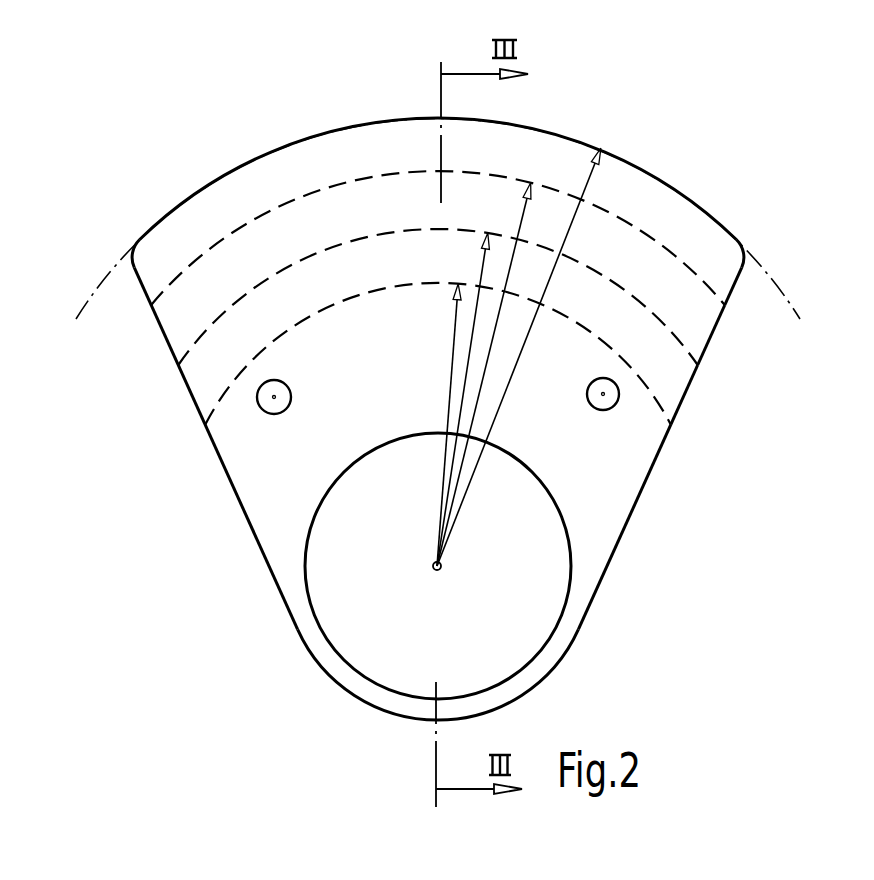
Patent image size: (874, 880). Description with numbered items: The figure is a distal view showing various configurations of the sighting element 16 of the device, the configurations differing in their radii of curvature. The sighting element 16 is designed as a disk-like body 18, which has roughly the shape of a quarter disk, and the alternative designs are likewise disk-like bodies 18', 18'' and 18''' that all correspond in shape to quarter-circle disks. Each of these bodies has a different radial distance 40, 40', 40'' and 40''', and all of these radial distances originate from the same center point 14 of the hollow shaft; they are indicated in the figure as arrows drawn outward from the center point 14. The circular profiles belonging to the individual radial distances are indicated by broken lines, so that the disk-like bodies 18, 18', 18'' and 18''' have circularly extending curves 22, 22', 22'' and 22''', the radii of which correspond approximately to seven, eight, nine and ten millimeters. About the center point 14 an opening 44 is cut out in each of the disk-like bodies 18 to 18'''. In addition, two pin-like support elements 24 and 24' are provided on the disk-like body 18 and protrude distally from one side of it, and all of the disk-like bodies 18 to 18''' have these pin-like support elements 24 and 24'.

The center point 14 is at (447, 563).
The sighting element 16 is at (260, 702).
The disk-like body 18 is at (779, 242).
The disk-like body 18' is at (758, 331).
The disk-like body 18'' is at (741, 394).
The disk-like body 18''' is at (669, 527).
The circularly extending curve 22 is at (405, 178).
The circularly extending curve 22' is at (438, 202).
The circularly extending curve 22'' is at (437, 219).
The circularly extending curve 22''' is at (438, 238).
The pin-like support element 24 is at (664, 413).
The pin-like support element 24' is at (181, 445).
The radial distance 40 is at (524, 314).
The radial distance 40' is at (566, 329).
The radial distance 40'' is at (594, 343).
The radial distance 40''' is at (624, 351).
The opening 44 is at (473, 631).